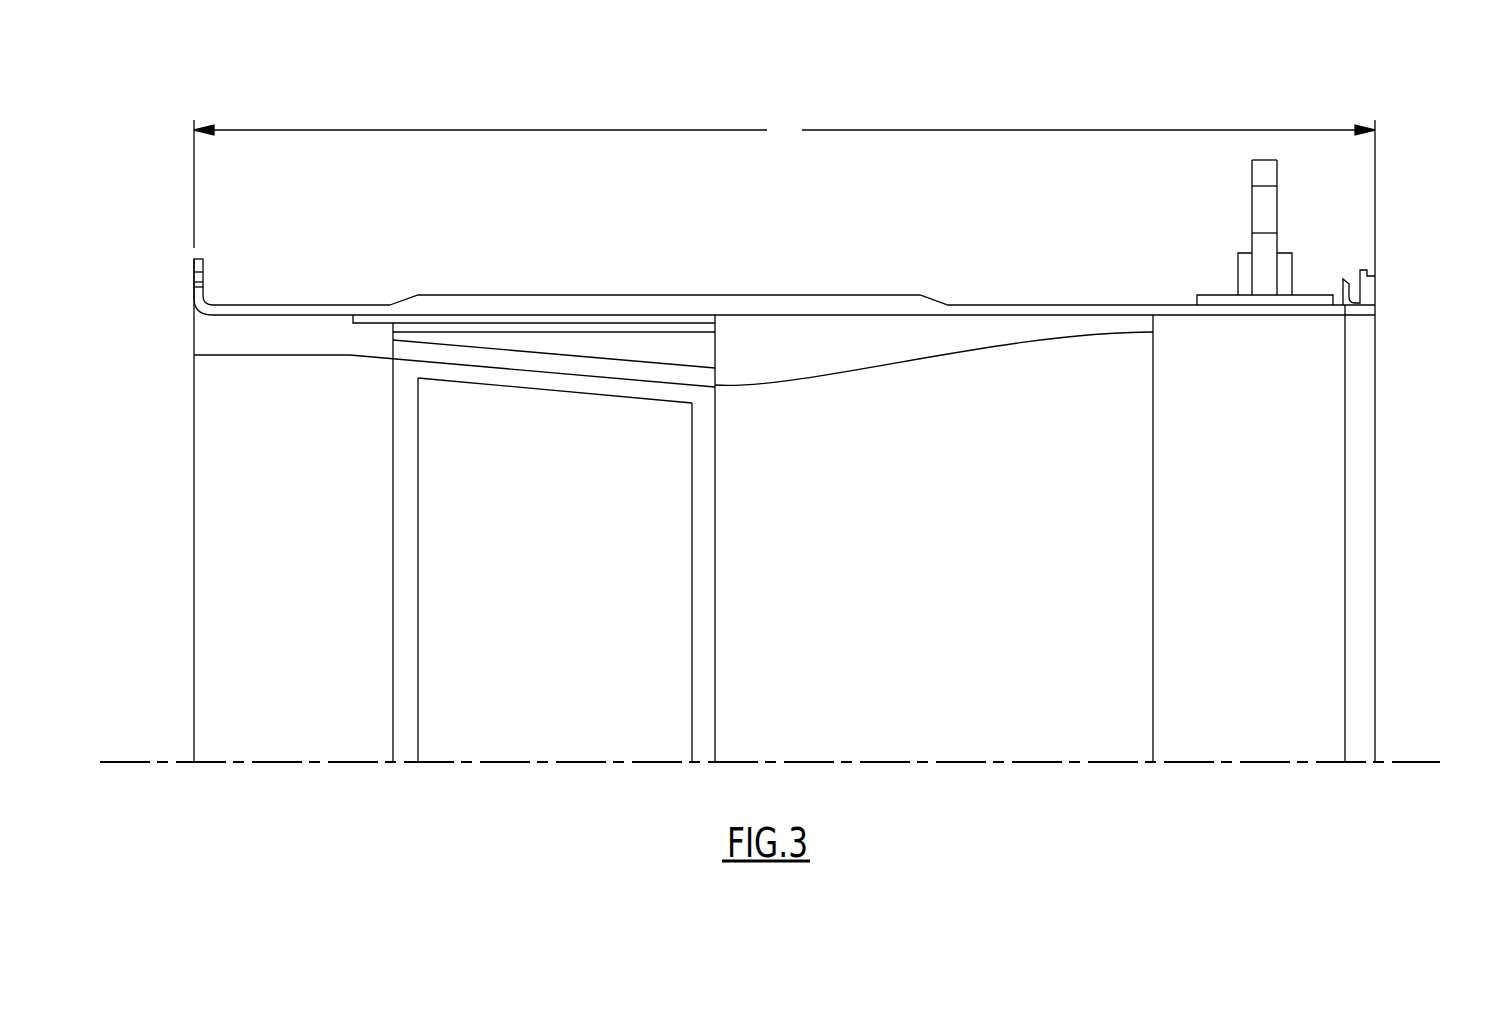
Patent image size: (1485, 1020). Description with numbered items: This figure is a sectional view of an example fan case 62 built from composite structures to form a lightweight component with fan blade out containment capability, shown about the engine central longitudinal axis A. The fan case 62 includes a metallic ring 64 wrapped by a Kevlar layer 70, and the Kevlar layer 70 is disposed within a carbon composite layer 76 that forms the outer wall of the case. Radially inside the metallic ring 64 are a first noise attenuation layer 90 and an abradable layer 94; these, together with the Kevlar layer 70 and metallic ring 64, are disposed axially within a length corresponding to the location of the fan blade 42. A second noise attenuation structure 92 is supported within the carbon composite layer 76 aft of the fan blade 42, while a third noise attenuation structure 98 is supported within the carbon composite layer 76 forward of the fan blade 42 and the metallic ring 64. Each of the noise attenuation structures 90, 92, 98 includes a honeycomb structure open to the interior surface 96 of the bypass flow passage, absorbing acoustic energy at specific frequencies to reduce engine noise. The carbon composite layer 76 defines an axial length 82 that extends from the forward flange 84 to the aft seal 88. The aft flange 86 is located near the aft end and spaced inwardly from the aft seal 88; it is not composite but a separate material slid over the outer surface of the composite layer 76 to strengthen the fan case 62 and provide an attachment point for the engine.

The fan case 62 is at (1022, 82).
The axial length 82 is at (784, 129).
The forward flange 84 is at (216, 270).
The aft flange 86 is at (1299, 250).
The aft seal 88 is at (1382, 276).
The carbon composite layer 76 is at (483, 302).
The Kevlar layer 70 is at (541, 320).
The metallic ring 64 is at (643, 332).
The third noise attenuation structure 98 is at (280, 336).
The interior surface 96 is at (345, 372).
The abradable layer 94 is at (532, 362).
The first noise attenuation layer 90 is at (662, 348).
The second noise attenuation structure 92 is at (822, 347).
The fan blade 42 is at (562, 605).
The engine central longitudinal axis A is at (1345, 761).